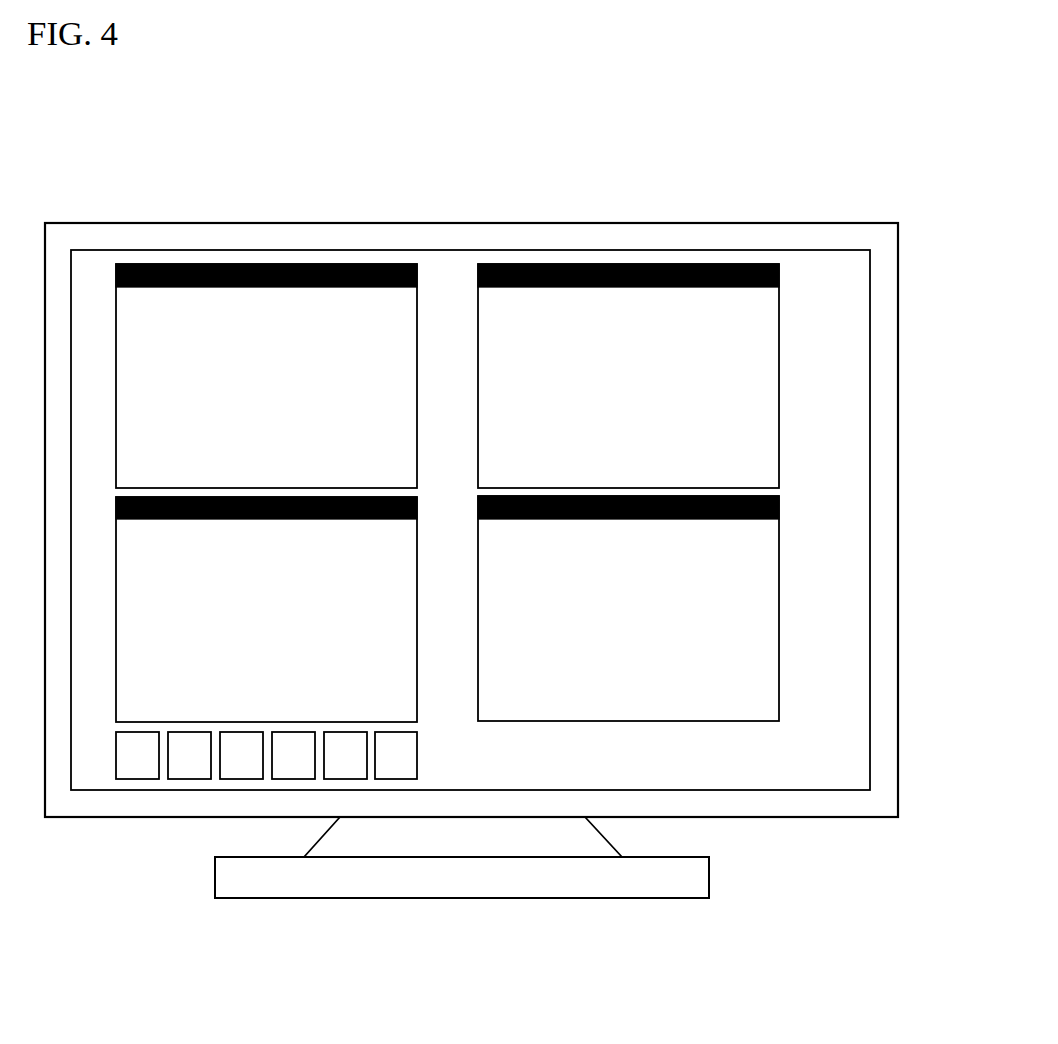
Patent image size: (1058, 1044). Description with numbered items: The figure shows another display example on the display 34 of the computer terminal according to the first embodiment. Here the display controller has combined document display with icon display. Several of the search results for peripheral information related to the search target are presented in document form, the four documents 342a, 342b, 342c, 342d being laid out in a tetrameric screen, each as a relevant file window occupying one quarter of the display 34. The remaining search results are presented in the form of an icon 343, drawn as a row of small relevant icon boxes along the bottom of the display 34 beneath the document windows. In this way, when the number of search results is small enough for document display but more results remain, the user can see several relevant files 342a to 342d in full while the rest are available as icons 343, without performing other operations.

The display 34 is at (478, 222).
The document display of search result 342a is at (417, 338).
The document display of search result 342b is at (417, 577).
The document display of search result 342c is at (779, 340).
The document display of search result 342d is at (779, 552).
The icon display of search result 343 is at (424, 749).